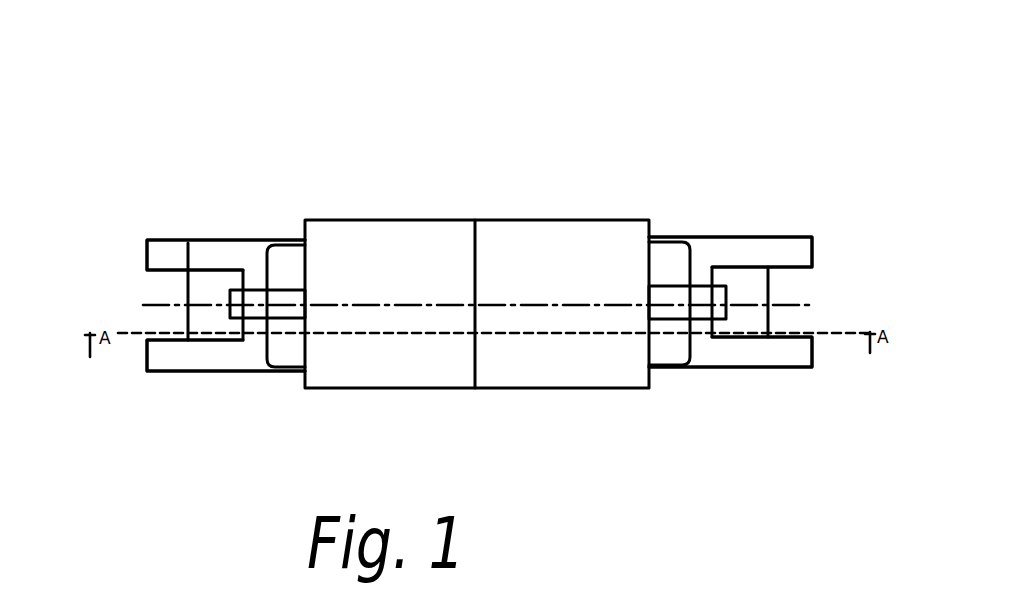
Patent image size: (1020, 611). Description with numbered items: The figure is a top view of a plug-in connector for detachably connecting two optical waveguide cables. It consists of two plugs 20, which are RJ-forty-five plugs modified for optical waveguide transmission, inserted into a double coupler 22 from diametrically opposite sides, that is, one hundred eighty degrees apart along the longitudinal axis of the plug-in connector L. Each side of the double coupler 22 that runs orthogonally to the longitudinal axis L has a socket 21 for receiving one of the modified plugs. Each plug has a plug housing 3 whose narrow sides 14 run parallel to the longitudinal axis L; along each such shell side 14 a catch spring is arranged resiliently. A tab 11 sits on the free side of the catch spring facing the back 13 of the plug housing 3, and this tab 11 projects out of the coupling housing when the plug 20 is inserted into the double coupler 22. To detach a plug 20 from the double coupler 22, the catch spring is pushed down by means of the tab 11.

The RJ-45 plug housing 3 is at (222, 238).
The tab 11 is at (240, 318).
The back of the RJ-45 plug housing 13 is at (148, 355).
The narrow side 14 is at (157, 263).
The plug 20 is at (188, 247).
The socket 21 is at (305, 273).
The double coupler 22 is at (396, 245).
The longitudinal axis of the plug-in connector L is at (151, 304).